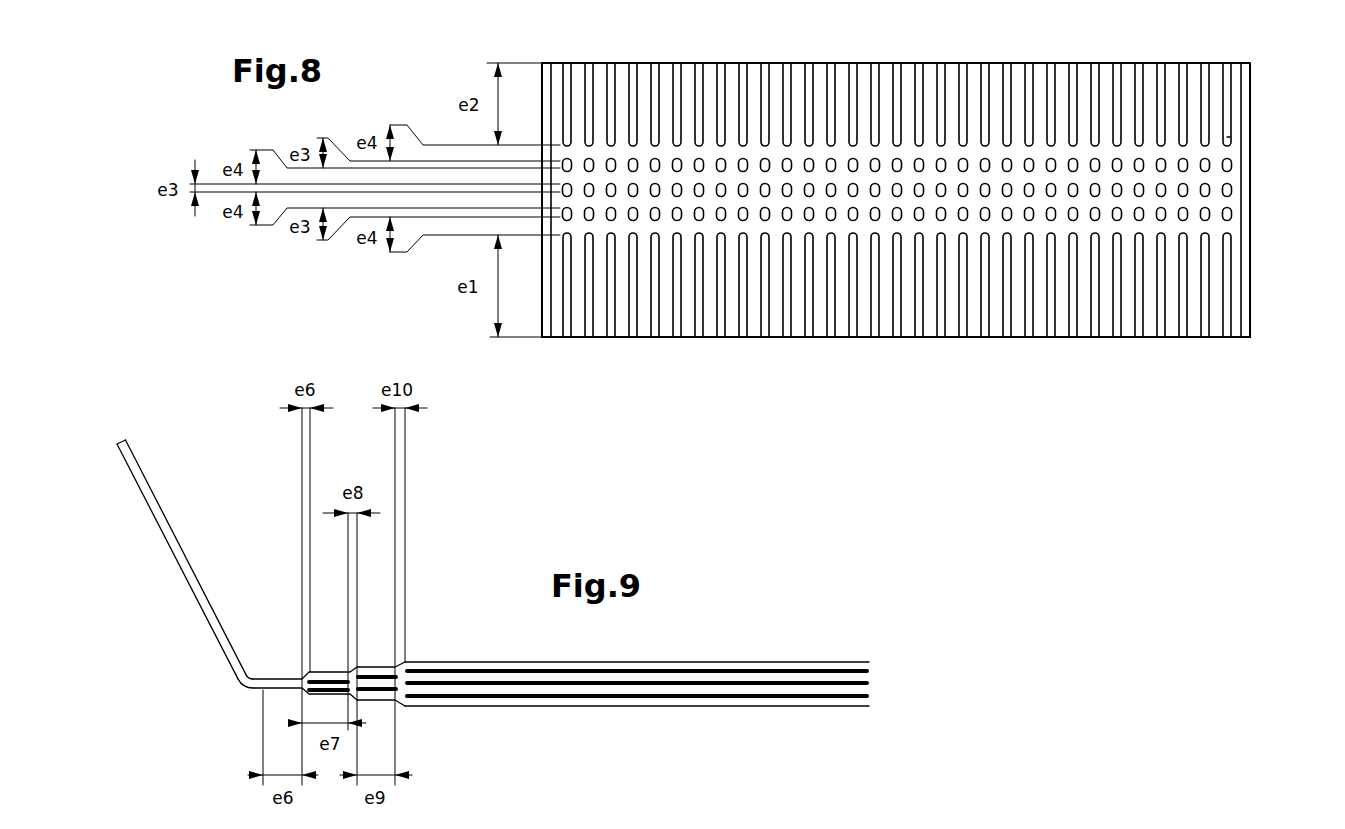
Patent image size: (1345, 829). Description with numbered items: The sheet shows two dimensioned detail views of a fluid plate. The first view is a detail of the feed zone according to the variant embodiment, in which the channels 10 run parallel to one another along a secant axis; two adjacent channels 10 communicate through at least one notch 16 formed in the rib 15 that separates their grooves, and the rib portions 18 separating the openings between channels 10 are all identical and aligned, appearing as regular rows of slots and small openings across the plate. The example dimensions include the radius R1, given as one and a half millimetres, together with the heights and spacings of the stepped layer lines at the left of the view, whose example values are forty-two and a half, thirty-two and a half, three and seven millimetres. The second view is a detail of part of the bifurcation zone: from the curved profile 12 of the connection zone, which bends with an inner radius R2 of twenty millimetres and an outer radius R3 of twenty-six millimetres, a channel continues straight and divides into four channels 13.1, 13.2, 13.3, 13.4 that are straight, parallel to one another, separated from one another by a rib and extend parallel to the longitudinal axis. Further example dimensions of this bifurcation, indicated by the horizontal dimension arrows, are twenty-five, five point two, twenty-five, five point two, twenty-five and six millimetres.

In FIG. 8, the channels 10 is at (665, 327).
In FIG. 8, the rib 15 is at (985, 332).
In FIG. 8, the notch 16 is at (796, 205).
In FIG. 8, the rib portions 18 is at (1180, 170).
In FIG. 8, the radius R1 is at (1230, 137).
In FIG. 9, the curved profile 12 is at (192, 600).
In FIG. 9, the first bifurcation channel 13.1 is at (880, 705).
In FIG. 9, the second bifurcation channel 13.2 is at (872, 688).
In FIG. 9, the third bifurcation channel 13.3 is at (872, 677).
In FIG. 9, the fourth bifurcation channel 13.4 is at (883, 661).
In FIG. 9, the radius R2 is at (250, 672).
In FIG. 9, the radius R3 is at (240, 690).